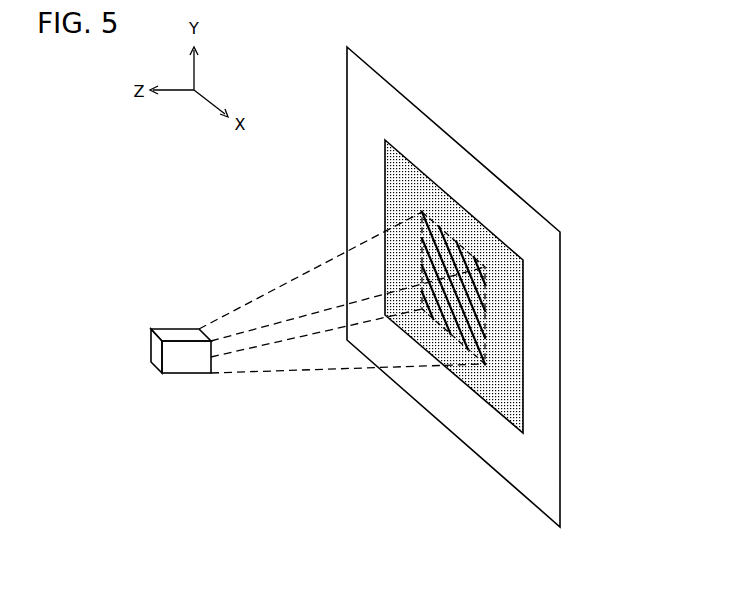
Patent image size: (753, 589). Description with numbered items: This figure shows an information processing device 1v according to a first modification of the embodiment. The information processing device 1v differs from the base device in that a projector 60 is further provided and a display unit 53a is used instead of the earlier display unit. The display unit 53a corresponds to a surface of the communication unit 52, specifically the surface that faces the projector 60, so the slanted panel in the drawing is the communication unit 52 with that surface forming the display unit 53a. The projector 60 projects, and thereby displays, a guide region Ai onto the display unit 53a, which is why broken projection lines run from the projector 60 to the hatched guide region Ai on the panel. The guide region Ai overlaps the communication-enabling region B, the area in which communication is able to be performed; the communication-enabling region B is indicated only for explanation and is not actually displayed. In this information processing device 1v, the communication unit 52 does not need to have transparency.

The information processing device 1v is at (587, 63).
The communication unit 52 is at (453, 287).
The display unit 53a is at (448, 134).
The communication-enabling region B is at (517, 298).
The guide region Ai is at (485, 348).
The projector 60 is at (181, 331).